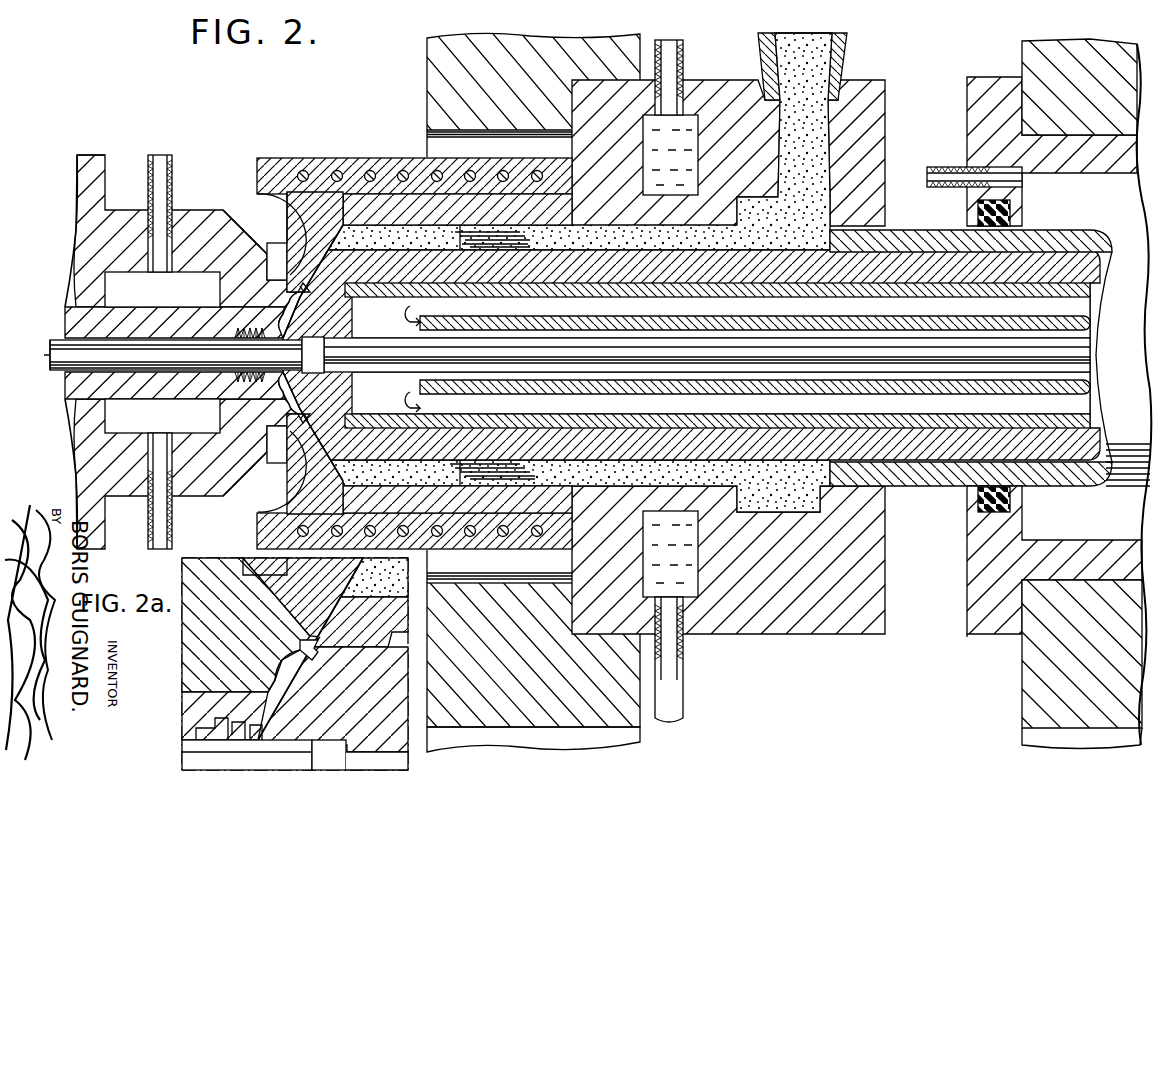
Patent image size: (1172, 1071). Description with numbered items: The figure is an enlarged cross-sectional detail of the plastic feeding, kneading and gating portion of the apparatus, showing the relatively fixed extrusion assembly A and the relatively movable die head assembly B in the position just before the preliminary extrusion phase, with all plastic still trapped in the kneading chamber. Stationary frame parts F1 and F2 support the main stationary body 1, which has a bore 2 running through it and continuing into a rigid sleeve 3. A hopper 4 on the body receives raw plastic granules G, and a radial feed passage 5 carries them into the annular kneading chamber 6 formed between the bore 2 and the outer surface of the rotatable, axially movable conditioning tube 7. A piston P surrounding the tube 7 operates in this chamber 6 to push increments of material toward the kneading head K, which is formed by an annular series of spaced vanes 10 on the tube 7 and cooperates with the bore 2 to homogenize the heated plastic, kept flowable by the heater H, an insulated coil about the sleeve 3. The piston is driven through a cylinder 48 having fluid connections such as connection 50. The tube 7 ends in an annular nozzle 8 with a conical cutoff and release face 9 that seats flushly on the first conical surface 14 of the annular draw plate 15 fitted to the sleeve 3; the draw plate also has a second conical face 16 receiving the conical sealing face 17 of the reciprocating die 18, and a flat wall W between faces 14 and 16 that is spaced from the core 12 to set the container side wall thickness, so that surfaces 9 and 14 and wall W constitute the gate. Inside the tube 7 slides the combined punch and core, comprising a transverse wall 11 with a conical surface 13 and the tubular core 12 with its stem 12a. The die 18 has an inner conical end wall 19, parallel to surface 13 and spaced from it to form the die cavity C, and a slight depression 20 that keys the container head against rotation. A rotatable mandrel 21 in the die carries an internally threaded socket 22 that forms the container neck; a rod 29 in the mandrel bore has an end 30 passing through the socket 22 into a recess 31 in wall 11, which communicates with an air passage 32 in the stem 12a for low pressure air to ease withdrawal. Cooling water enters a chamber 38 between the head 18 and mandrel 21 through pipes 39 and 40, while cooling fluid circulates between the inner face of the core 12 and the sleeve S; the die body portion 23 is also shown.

In FIG. 2, the main stationary body 1 is at (860, 86).
In FIG. 2, the bore 2 is at (858, 230).
In FIG. 2, the sleeve 3 is at (360, 196).
In FIG. 2, the hopper 4 is at (845, 48).
In FIG. 2, the feed passage 5 is at (828, 135).
In FIG. 2, the annular kneading chamber 6 is at (580, 272).
In FIG. 2, the plastic material conditioning tube 7 is at (1068, 278).
In FIG. 2, the annular nozzle 8 is at (345, 420).
In FIG. 2, the conical material cutoff and release face 9 is at (340, 258).
In FIG. 2, the vanes 10 is at (512, 240).
In FIG. 2, the transverse wall 11 is at (340, 318).
In FIG. 2A, the transverse wall 11 is at (333, 694).
In FIG. 2, the tubular barrel-like core 12 is at (1084, 298).
In FIG. 2, the core stem 12a is at (552, 370).
In FIG. 2, the conical surface 13 is at (296, 304).
In FIG. 2A, the conical surface 13 is at (300, 714).
In FIG. 2, the first conical surface 14 is at (307, 200).
In FIG. 2A, the first conical surface 14 is at (360, 612).
In FIG. 2, the annular draw plate 15 is at (292, 215).
In FIG. 2, the second conical face 16 is at (280, 222).
In FIG. 2A, the second conical face 16 is at (300, 622).
In FIG. 2, the conical sealing face 17 is at (254, 252).
In FIG. 2A, the conical sealing face 17 is at (250, 592).
In FIG. 2, the reciprocating die 18 is at (200, 215).
In FIG. 2, the inner conical end wall 19 is at (282, 303).
In FIG. 2A, the inner conical end wall 19 is at (276, 684).
In FIG. 2, the depression 20 is at (283, 292).
In FIG. 2A, the depression 20 is at (282, 658).
In FIG. 2, the rotatable mandrel 21 is at (122, 314).
In FIG. 2, the internally threaded socket 22 is at (240, 376).
In FIG. 2A, the internally threaded socket 22 is at (232, 740).
In FIG. 2, the base block 23 is at (82, 186).
In FIG. 2, the rod 29 is at (52, 348).
In FIG. 2, the rod end 30 is at (176, 355).
In FIG. 2A, the rod end 30 is at (190, 750).
In FIG. 2, the recess 31 is at (310, 355).
In FIG. 2A, the recess 31 is at (328, 762).
In FIG. 2, the air passage 32 is at (707, 355).
In FIG. 2A, the air passage 32 is at (392, 768).
In FIG. 2, the chamber 38 is at (162, 289).
In FIG. 2, the pipe 39 is at (170, 163).
In FIG. 2, the pipe 40 is at (148, 516).
In FIG. 2, the cylinder 48 is at (1010, 198).
In FIG. 2, the fluid connection 50 is at (940, 166).
In FIG. 2, the extrusion assembly A is at (947, 604).
In FIG. 2, the die head assembly B is at (90, 143).
In FIG. 2, the die cavity C is at (258, 355).
In FIG. 2A, the die cavity C is at (236, 729).
In FIG. 2, the raw plastic material granules G is at (798, 42).
In FIG. 2, the heater H is at (380, 170).
In FIG. 2A, the heater H is at (383, 577).
In FIG. 2, the kneading head K is at (478, 240).
In FIG. 2, the piston P is at (1120, 228).
In FIG. 2, the sleeve S is at (1090, 392).
In FIG. 2, the flat wall W is at (300, 356).
In FIG. 2A, the flat wall W is at (315, 655).
In FIG. 2, the stationary frame part F1 is at (660, 750).
In FIG. 2, the stationary frame part F2 is at (985, 742).